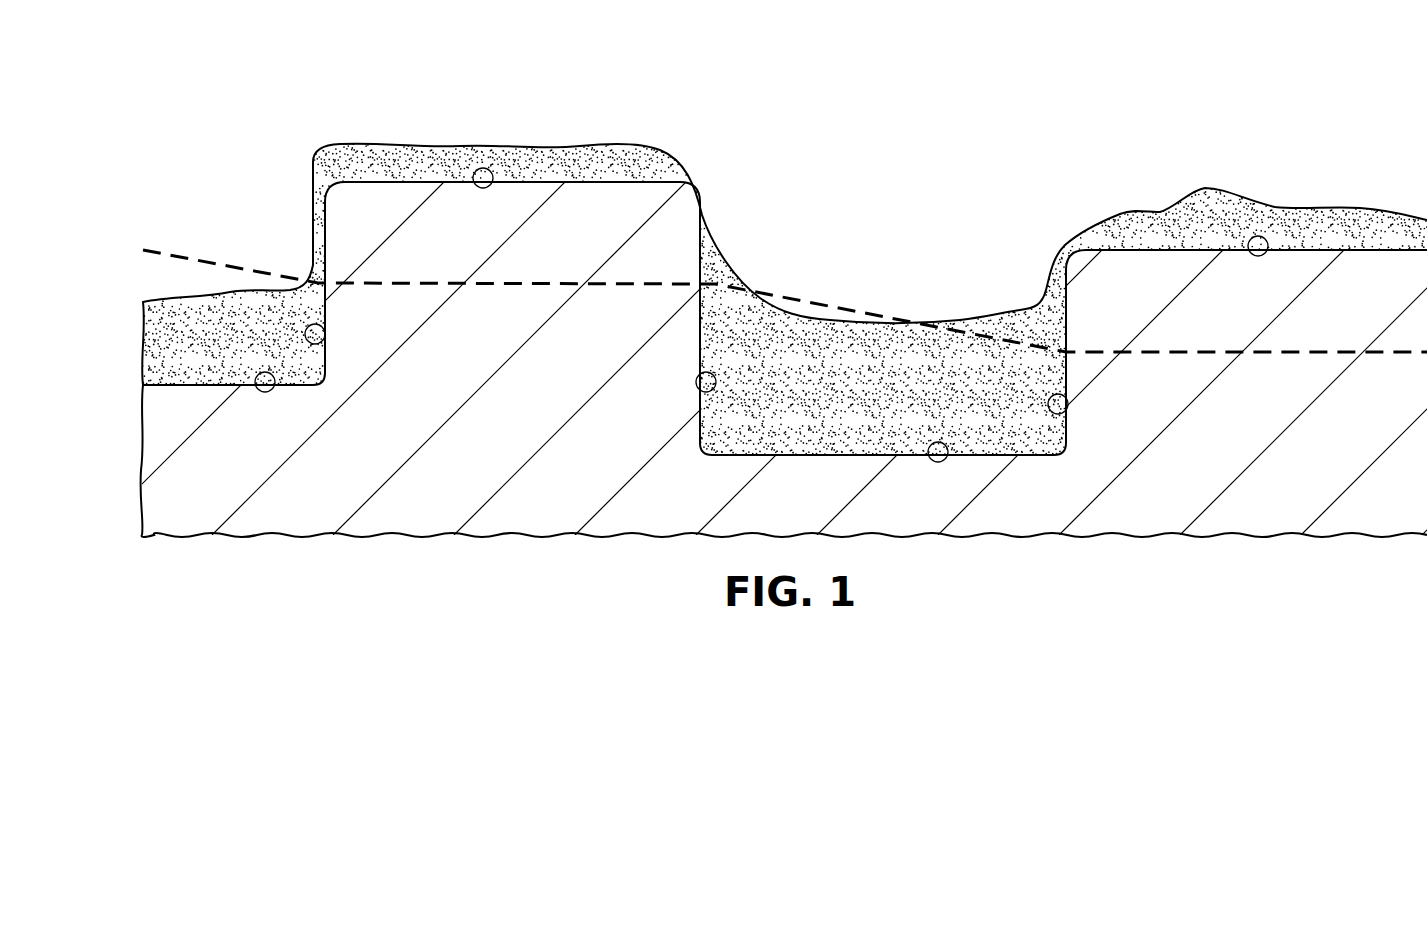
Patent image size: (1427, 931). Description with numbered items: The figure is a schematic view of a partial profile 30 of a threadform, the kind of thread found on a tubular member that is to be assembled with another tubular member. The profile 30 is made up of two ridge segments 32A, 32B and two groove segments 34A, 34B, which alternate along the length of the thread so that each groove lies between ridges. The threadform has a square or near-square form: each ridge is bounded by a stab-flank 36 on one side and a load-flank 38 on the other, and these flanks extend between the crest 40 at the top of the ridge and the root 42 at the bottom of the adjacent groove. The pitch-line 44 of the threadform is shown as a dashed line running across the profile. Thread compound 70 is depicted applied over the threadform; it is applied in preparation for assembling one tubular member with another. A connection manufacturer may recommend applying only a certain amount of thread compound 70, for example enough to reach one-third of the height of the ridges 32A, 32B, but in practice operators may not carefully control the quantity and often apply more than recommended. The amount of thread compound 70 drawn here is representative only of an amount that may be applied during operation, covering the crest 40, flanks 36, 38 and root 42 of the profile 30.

The partial profile 30 is at (1202, 80).
The ridge segment 32A is at (1288, 286).
The ridge segment 32B is at (512, 218).
The groove segment 34A is at (925, 352).
The groove segment 34B is at (233, 293).
The stab-flank 36 is at (697, 385).
The load-flank 38 is at (326, 348).
The crest 40 is at (484, 188).
The root 42 is at (264, 392).
The pitch-line 44 is at (812, 300).
The thread compound 70 is at (378, 150).